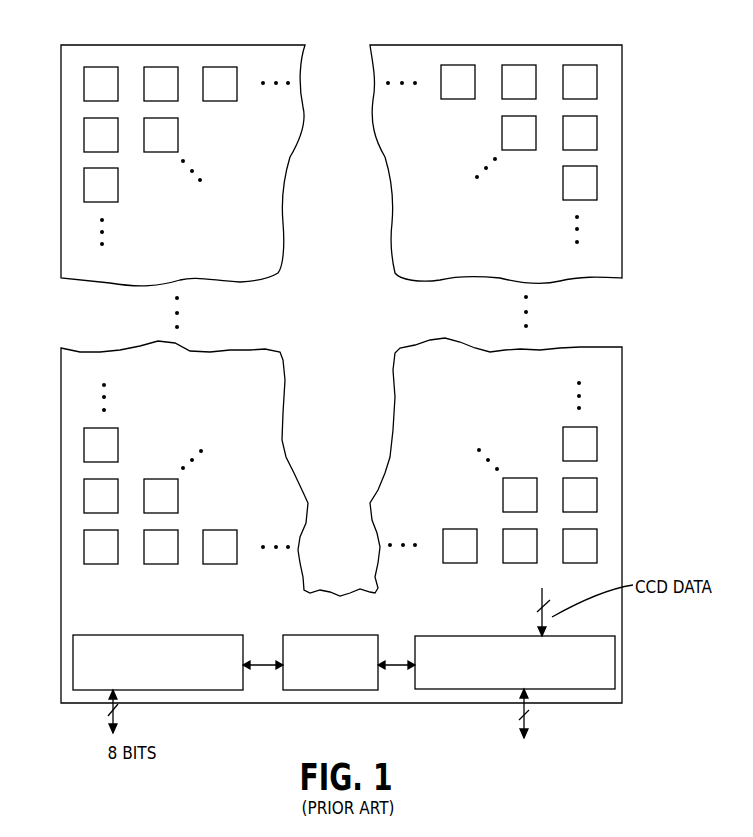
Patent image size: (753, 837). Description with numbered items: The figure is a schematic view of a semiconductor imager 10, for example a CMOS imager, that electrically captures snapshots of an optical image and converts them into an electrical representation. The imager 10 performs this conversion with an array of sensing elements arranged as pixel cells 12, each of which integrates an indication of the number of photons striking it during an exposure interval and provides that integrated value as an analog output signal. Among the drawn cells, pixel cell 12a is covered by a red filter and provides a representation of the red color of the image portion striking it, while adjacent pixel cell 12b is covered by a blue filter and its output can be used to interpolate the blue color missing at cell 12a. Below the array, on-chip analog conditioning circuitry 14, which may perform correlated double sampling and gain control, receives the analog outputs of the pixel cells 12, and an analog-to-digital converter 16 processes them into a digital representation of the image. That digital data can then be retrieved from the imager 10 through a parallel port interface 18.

The semiconductor imager 10 is at (622, 88).
The pixel cell 12 is at (105, 65).
The pixel cell 12a is at (83, 79).
The pixel cell 12b is at (178, 120).
The analog conditioning circuitry 14 is at (615, 663).
The analog-to-digital converter 16 is at (332, 693).
The parallel port interface 18 is at (232, 635).